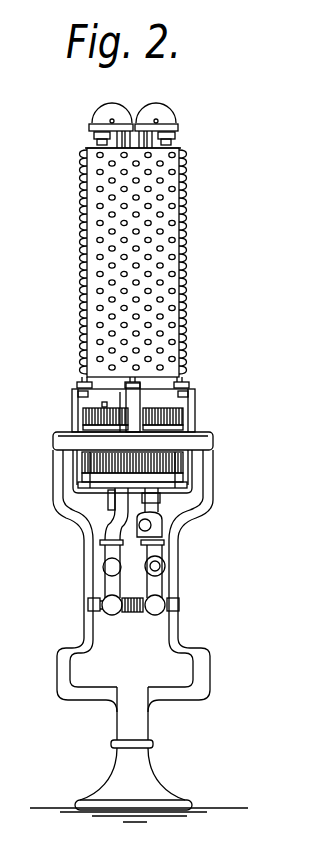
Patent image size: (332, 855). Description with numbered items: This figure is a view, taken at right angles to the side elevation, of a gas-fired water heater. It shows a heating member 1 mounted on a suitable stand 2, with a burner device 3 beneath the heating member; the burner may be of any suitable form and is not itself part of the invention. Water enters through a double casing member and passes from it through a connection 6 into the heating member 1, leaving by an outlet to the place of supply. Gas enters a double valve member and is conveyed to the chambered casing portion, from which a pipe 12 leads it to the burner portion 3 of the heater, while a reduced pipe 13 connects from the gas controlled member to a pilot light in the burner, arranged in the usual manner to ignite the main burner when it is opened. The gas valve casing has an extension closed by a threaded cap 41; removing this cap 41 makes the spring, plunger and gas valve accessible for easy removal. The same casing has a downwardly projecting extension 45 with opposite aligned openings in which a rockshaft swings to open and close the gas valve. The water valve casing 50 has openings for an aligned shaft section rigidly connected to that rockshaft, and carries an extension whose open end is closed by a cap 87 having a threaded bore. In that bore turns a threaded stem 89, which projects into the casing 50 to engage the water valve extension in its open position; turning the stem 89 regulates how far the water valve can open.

The heating member 1 is at (190, 387).
The stand 2 is at (178, 625).
The burner device 3 is at (180, 413).
The connection 6 is at (160, 527).
The pipe 12 is at (110, 527).
The reduced pipe 13 is at (102, 495).
The threaded cap 41 is at (104, 566).
The downwardly projecting extension 45 is at (113, 615).
The casing 50 is at (152, 613).
The cap 87 is at (165, 565).
The threaded stem 89 is at (160, 569).